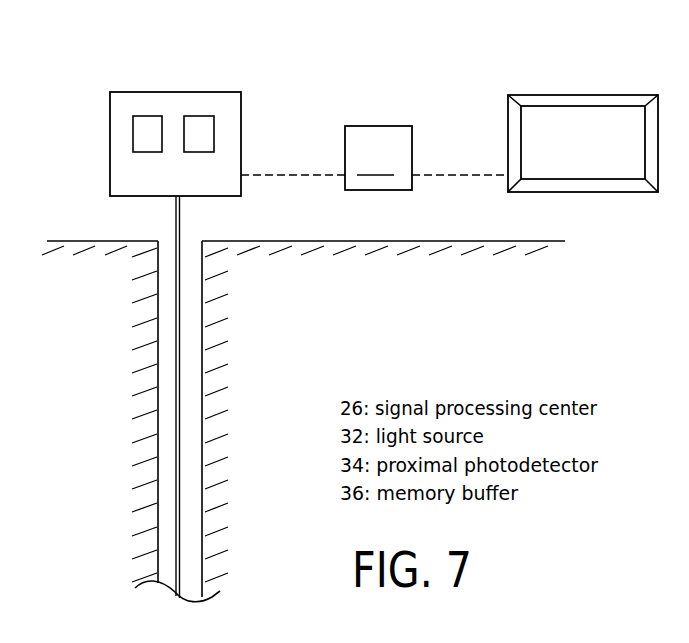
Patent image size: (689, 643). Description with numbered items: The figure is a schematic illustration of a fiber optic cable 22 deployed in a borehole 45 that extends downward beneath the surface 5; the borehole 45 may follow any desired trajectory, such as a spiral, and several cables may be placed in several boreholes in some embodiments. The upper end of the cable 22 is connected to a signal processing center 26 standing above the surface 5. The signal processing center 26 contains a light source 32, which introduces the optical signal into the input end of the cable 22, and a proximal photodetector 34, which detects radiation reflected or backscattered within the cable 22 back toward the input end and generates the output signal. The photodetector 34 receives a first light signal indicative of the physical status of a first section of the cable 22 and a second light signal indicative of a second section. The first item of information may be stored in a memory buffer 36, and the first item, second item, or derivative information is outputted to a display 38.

The surface 5 is at (493, 240).
The fiber optic cable 22 is at (177, 225).
The signal processing center 26 is at (140, 180).
The light source 32 is at (147, 130).
The proximal photodetector 34 is at (202, 132).
The memory buffer 36 is at (378, 158).
The display 38 is at (556, 125).
The borehole 45 is at (205, 410).